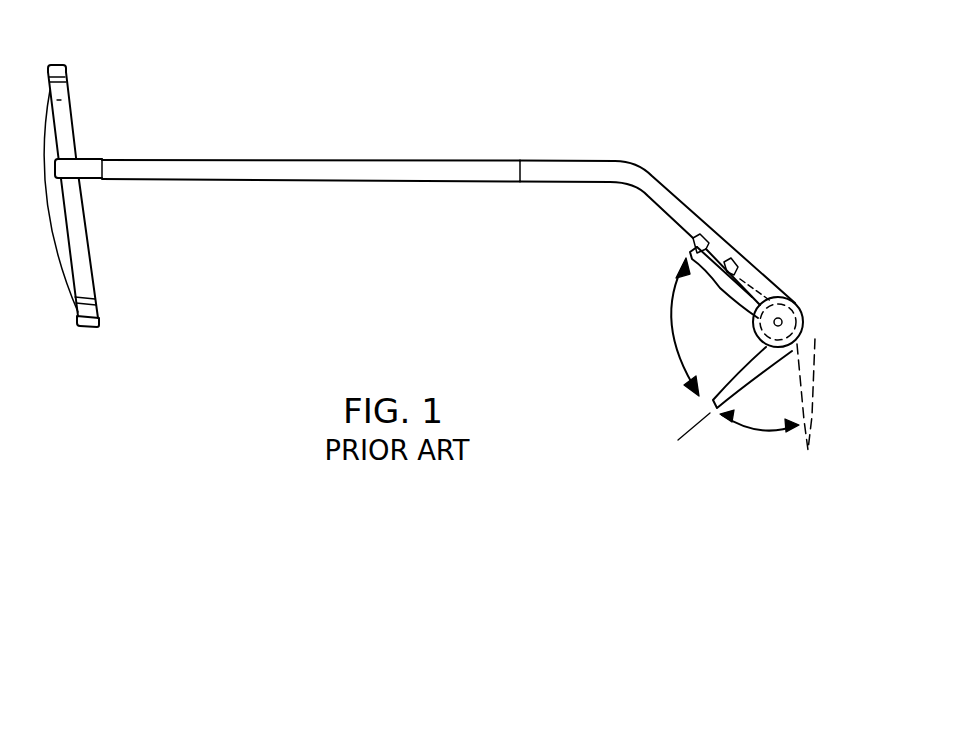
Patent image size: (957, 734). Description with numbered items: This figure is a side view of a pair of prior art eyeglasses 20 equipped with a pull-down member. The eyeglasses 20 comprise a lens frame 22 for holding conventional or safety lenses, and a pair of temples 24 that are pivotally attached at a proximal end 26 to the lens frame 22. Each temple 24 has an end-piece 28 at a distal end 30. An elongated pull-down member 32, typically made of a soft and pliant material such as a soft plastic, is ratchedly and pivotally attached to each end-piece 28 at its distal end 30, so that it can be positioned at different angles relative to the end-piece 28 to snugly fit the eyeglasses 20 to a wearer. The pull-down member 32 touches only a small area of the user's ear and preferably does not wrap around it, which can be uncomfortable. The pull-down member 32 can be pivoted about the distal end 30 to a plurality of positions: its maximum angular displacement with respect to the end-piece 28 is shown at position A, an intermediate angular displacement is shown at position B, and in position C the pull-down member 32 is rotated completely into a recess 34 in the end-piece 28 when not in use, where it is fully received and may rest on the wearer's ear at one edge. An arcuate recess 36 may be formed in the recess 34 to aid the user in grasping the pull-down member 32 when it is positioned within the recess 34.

The eyeglasses 20 is at (118, 90).
The lens frame 22 is at (90, 330).
The temples 24 is at (332, 180).
The proximal end 26 is at (87, 168).
The end-piece 28 is at (660, 185).
The distal end 30 is at (795, 302).
The pull-down member 32 is at (818, 378).
The recess 34 is at (699, 250).
The arcuate recess 36 is at (732, 266).